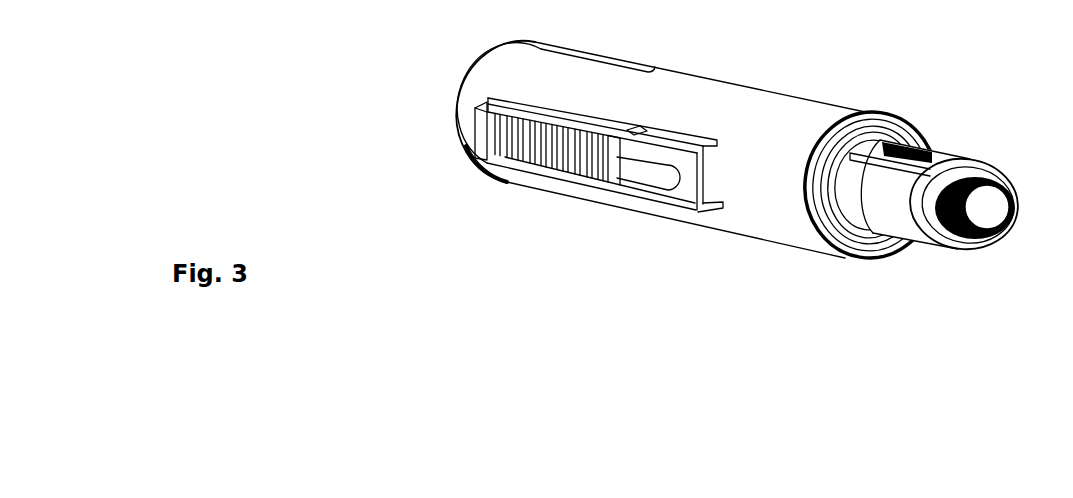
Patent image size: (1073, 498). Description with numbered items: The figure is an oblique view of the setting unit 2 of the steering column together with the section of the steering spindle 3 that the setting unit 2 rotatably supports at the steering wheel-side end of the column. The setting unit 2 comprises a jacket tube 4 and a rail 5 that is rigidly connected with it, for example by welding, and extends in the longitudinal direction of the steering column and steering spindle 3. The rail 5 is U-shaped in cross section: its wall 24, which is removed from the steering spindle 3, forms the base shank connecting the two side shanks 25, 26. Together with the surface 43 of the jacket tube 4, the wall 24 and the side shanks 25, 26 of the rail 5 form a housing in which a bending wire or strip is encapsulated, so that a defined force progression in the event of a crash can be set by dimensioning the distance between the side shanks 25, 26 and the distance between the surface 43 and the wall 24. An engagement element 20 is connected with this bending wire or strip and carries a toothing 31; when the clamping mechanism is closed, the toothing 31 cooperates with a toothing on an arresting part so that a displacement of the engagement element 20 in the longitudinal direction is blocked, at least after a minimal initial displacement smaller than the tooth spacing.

The setting unit 2 is at (829, 92).
The steering spindle 3 is at (904, 234).
The jacket tube 4 is at (800, 233).
The rail 5 is at (688, 207).
The engagement element 20 is at (510, 171).
The wall 24 is at (636, 148).
The side shank 25 is at (696, 137).
The side shank 26 is at (709, 206).
The toothing 31 is at (577, 167).
The surface 43 is at (645, 174).